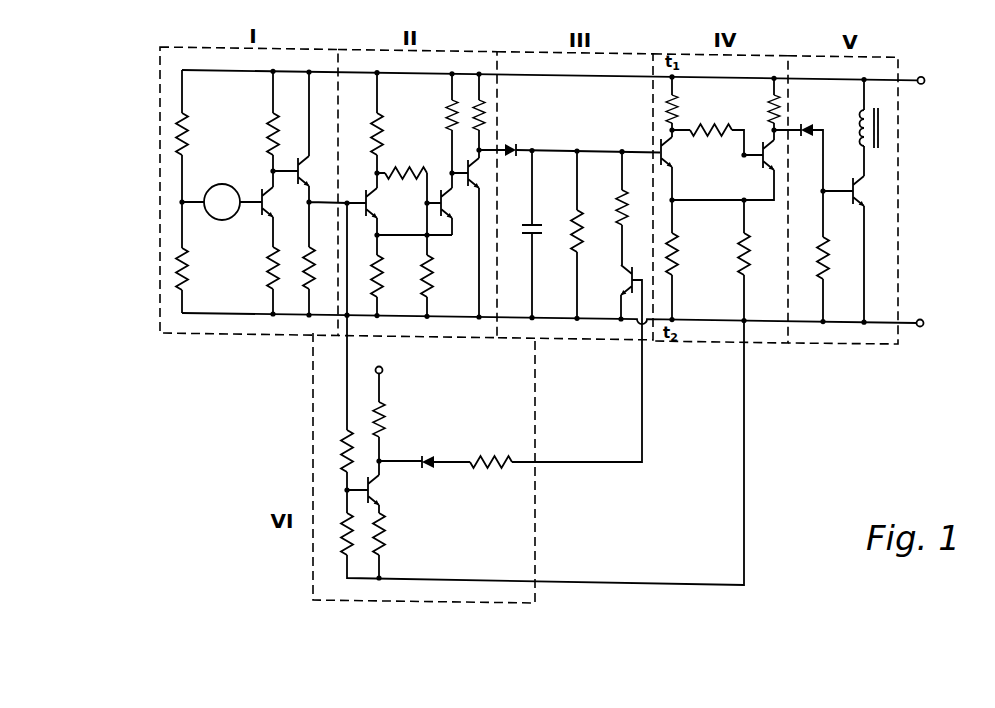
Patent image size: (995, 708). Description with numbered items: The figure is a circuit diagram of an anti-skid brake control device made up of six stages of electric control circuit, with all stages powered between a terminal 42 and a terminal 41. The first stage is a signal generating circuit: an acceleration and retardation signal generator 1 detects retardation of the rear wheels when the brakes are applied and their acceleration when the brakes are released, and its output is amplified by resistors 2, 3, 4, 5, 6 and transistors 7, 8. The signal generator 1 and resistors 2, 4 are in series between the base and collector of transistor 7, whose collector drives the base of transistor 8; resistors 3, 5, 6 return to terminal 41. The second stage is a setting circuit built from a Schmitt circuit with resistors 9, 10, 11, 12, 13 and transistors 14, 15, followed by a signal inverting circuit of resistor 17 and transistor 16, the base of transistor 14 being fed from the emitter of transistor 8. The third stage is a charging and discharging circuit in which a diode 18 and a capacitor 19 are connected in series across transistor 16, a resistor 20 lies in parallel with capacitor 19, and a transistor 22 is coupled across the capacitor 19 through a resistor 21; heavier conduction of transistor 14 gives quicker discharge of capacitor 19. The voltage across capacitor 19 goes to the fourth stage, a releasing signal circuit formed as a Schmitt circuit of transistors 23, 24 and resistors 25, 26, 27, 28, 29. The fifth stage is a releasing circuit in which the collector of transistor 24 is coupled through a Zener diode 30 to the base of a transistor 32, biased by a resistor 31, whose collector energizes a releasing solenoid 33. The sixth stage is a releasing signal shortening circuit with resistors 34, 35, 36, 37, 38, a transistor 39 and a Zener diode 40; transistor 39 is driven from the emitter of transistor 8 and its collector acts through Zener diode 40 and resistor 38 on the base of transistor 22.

The acceleration and retardation signal generator 1 is at (233, 182).
The resistor 2 is at (195, 126).
The resistor 3 is at (191, 268).
The resistor 4 is at (278, 128).
The resistor 5 is at (262, 273).
The resistor 6 is at (303, 277).
The transistor 7 is at (257, 223).
The transistor 8 is at (308, 168).
The resistor 9 is at (387, 126).
The resistor 10 is at (381, 275).
The resistor 11 is at (404, 173).
The resistor 12 is at (434, 277).
The resistor 13 is at (448, 117).
The transistor 14 is at (376, 210).
The transistor 15 is at (446, 212).
The transistor 16 is at (500, 190).
The resistor 17 is at (502, 115).
The diode 18 is at (528, 147).
The capacitor 19 is at (528, 243).
The resistor 20 is at (571, 244).
The resistor 21 is at (619, 214).
The transistor 22 is at (619, 277).
The transistor 23 is at (669, 173).
The transistor 24 is at (777, 162).
The resistor 25 is at (687, 107).
The resistor 26 is at (685, 256).
The resistor 27 is at (722, 146).
The resistor 28 is at (734, 277).
The resistor 29 is at (764, 114).
The Zener diode 30 is at (814, 124).
The resistor 31 is at (826, 264).
The transistor 32 is at (864, 197).
The releasing solenoid 33 is at (886, 130).
The resistor 34 is at (338, 452).
The resistor 35 is at (336, 553).
The resistor 36 is at (392, 418).
The resistor 37 is at (394, 544).
The resistor 38 is at (494, 452).
The transistor 39 is at (386, 500).
The Zener diode 40 is at (438, 454).
The terminal 41 is at (925, 324).
The terminal 42 is at (926, 83).